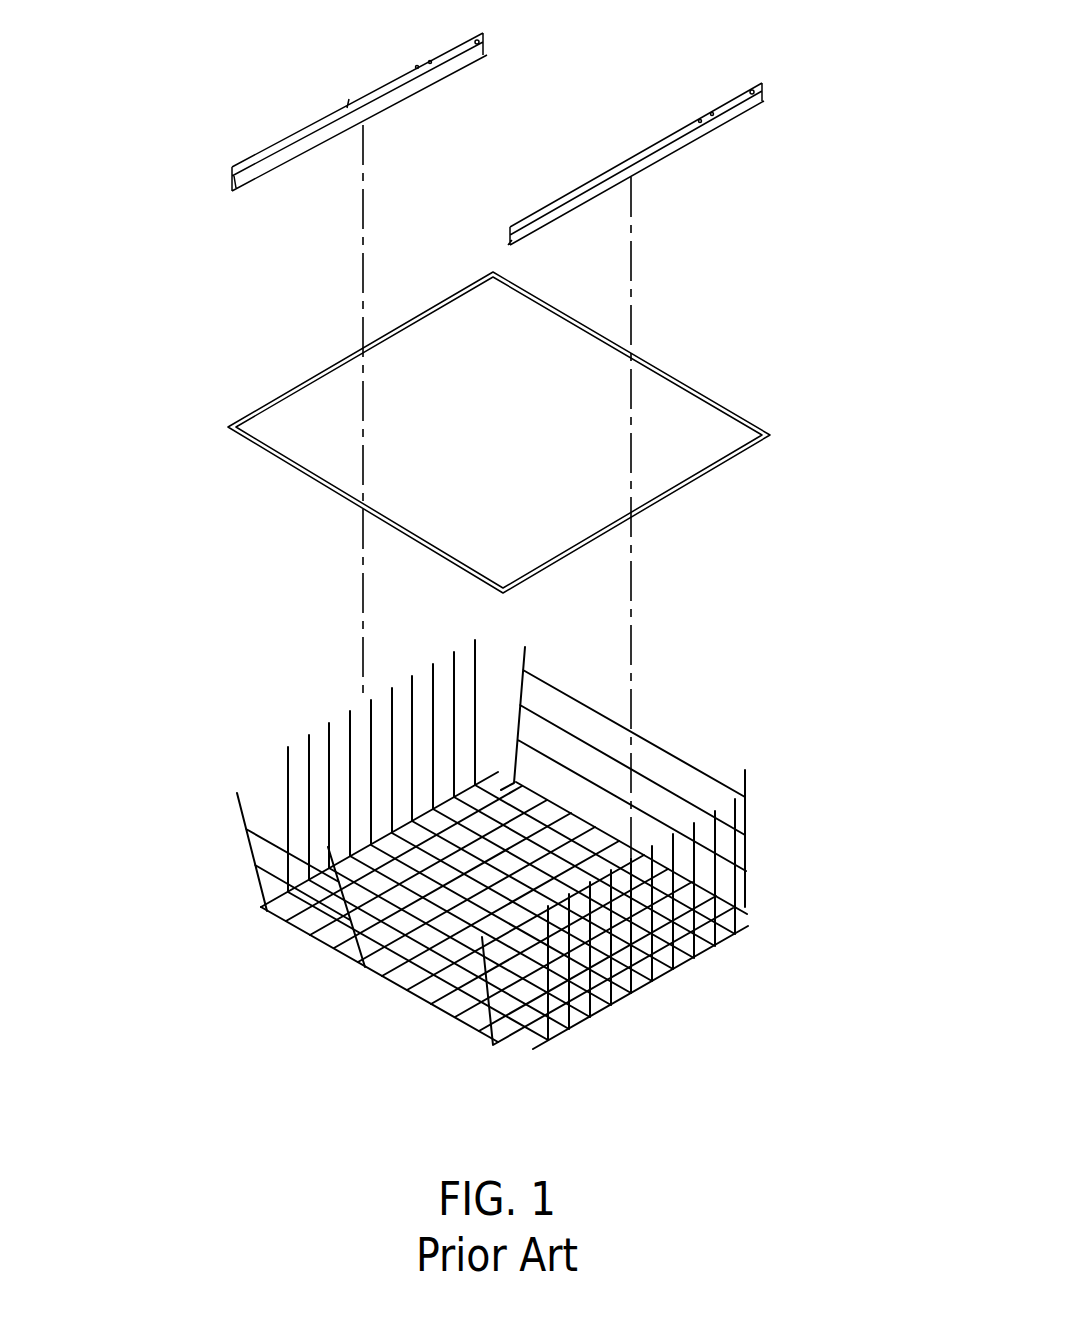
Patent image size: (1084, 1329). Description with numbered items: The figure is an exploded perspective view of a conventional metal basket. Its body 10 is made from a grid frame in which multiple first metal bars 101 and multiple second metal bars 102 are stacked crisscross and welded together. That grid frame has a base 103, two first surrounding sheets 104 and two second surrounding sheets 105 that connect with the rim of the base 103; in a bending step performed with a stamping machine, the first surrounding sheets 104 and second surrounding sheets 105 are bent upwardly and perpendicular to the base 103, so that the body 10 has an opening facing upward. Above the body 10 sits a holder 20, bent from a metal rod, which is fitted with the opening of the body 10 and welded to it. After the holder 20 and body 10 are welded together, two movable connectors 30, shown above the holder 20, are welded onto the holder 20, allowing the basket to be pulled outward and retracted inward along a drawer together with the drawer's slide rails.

The body 10 is at (506, 852).
The holder 20 is at (670, 358).
The movable connectors 30 is at (314, 99).
The first metal bars 101 is at (597, 983).
The second metal bars 102 is at (515, 998).
The base 103 is at (508, 880).
The first surrounding sheets 104 is at (652, 777).
The second surrounding sheets 105 is at (348, 747).